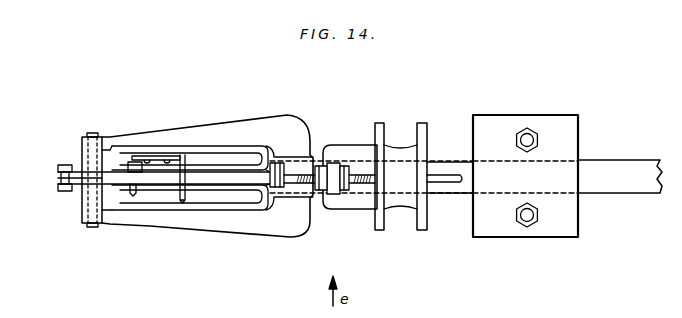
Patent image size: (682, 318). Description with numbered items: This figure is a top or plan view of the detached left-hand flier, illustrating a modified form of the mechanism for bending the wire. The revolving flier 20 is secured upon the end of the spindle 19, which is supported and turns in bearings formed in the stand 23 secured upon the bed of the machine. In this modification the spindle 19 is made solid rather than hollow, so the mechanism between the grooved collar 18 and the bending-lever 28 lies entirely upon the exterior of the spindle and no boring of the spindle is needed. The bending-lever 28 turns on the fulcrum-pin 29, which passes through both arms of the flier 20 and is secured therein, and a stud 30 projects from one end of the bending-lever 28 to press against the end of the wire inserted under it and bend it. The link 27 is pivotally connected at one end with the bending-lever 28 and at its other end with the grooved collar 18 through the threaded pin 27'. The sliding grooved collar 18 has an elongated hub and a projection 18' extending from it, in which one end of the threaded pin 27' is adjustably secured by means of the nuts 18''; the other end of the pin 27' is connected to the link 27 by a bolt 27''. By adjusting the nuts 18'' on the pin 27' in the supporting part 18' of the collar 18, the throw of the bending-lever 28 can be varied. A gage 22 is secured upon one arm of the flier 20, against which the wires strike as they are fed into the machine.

The grooved collar 18 is at (371, 174).
The projection 18' is at (342, 154).
The nuts 18'' is at (343, 205).
The spindle 19 is at (620, 176).
The flier 20 is at (207, 176).
The gage 22 is at (171, 160).
The stand 23 is at (525, 176).
The link 27 is at (164, 172).
The threaded pin 27' is at (304, 217).
The bolt 27'' is at (269, 211).
The bending-lever 28 is at (110, 170).
The fulcrum-pin 29 is at (88, 198).
The stud 30 is at (133, 197).